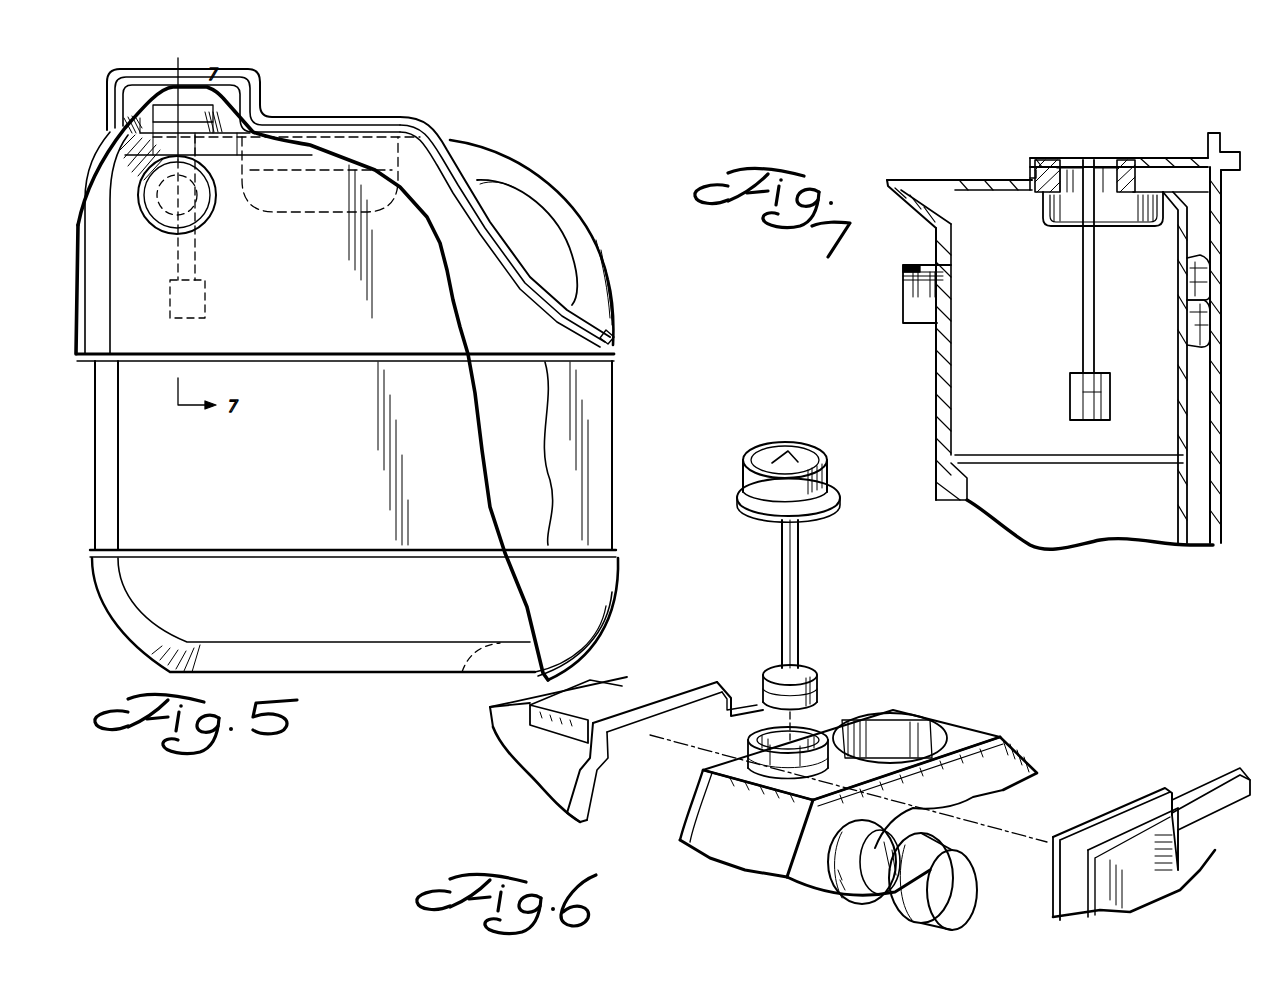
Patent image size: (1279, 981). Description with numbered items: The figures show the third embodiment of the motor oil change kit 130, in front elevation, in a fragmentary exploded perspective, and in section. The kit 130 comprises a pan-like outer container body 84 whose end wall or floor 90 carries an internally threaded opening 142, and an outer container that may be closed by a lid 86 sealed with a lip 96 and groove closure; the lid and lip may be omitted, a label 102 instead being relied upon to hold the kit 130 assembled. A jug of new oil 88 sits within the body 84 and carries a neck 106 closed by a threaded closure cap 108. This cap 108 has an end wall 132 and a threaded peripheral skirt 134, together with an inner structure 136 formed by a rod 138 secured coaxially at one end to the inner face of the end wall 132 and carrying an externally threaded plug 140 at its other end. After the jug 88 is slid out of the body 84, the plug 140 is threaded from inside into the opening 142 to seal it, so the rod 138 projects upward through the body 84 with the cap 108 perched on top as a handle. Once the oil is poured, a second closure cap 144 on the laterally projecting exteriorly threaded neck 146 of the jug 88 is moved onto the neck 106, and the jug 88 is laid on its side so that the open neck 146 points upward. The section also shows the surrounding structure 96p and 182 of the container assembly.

In FIG. 7, the pan-like outer container body 84 is at (1163, 158).
In FIG. 6, the pan-like outer container body 84 is at (655, 688).
In FIG. 5, the lid 86 is at (612, 334).
In FIG. 5, the jug of new oil 88 is at (300, 308).
In FIG. 6, the jug of new oil 88 is at (993, 708).
In FIG. 7, the end wall or floor 90 is at (935, 374).
In FIG. 5, the lip 96 is at (90, 329).
In FIG. 5, the lid cut line 96p is at (210, 88).
In FIG. 5, the label 102 is at (602, 430).
In FIG. 7, the neck 106 is at (1130, 181).
In FIG. 6, the neck 106 is at (763, 772).
In FIG. 5, the closure cap 108 is at (150, 121).
In FIG. 7, the closure cap 108 is at (1062, 160).
In FIG. 6, the closure cap 108 is at (833, 466).
In FIG. 5, the motor oil change kit 130 is at (612, 157).
In FIG. 7, the end wall 132 is at (1110, 160).
In FIG. 7, the threaded peripheral skirt 134 is at (1045, 190).
In FIG. 7, the inner structure 136 is at (1058, 295).
In FIG. 5, the rod 138 is at (197, 268).
In FIG. 7, the rod 138 is at (1095, 298).
In FIG. 6, the rod 138 is at (780, 578).
In FIG. 5, the externally threaded plug 140 is at (187, 320).
In FIG. 7, the externally threaded plug 140 is at (1111, 397).
In FIG. 6, the externally threaded plug 140 is at (819, 692).
In FIG. 5, the internally threaded opening 142 is at (205, 222).
In FIG. 5, the second closure cap 144 is at (158, 234).
In FIG. 7, the second closure cap 144 is at (1210, 307).
In FIG. 6, the second closure cap 144 is at (950, 860).
In FIG. 7, the laterally projecting exteriorly threaded neck 146 is at (1185, 280).
In FIG. 6, the laterally projecting exteriorly threaded neck 146 is at (861, 825).
In FIG. 7, the side fitting 182 is at (902, 299).